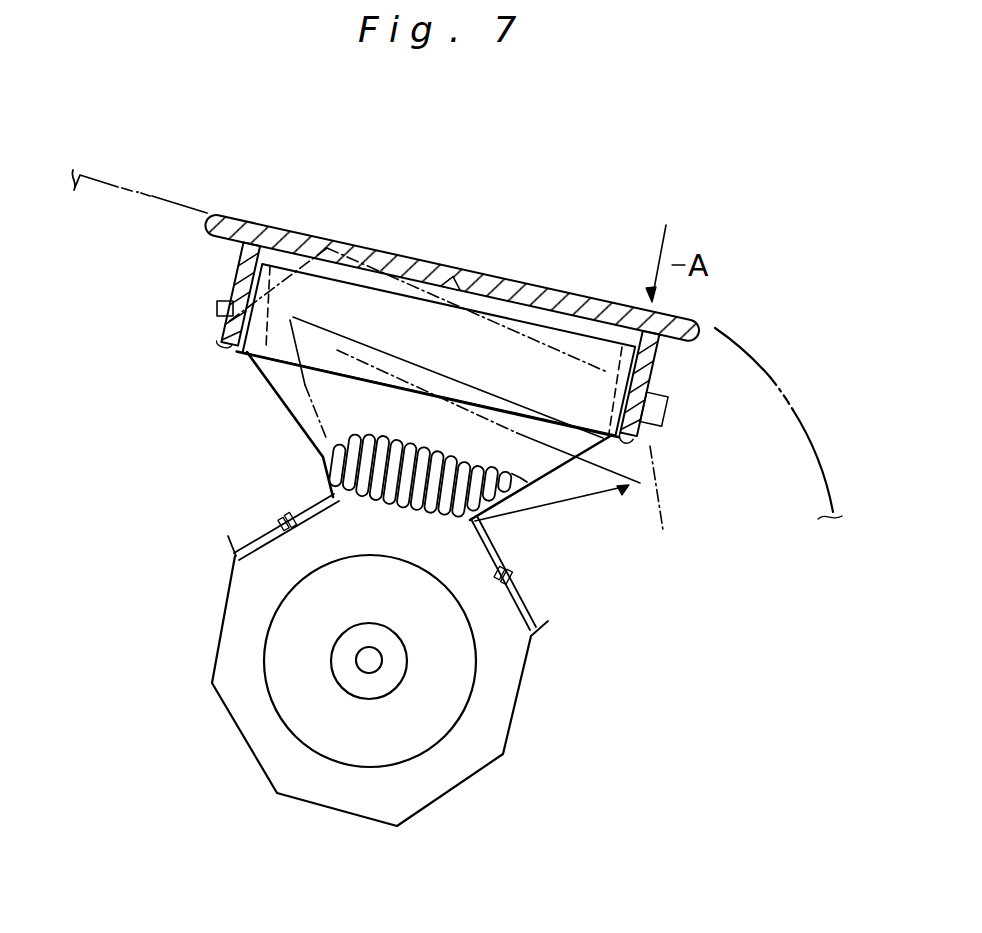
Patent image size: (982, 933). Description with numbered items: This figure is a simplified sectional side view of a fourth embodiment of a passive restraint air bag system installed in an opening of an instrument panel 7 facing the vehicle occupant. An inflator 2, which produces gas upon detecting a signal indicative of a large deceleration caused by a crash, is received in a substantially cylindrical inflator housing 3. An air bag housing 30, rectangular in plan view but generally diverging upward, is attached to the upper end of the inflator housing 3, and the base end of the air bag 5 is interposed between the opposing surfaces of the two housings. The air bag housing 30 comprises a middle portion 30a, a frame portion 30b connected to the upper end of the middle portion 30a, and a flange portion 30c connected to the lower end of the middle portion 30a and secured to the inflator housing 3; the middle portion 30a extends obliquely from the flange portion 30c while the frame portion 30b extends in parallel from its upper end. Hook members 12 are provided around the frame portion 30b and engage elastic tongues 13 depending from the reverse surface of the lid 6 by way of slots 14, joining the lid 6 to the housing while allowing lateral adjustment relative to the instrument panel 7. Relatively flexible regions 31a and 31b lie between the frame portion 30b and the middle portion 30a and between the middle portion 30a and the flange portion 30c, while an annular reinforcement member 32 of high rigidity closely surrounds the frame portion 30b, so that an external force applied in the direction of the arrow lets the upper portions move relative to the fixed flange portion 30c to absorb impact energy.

The inflator 2 is at (476, 671).
The inflator housing 3 is at (220, 639).
The air bag 5 is at (322, 479).
The lid 6 is at (476, 268).
The instrument panel 7 is at (190, 203).
The hook members 12 is at (217, 304).
The elastic tongues 13 is at (242, 259).
The slots 14 is at (240, 283).
The air bag housing 30 is at (86, 352).
The middle portion 30a is at (300, 388).
The frame portion 30b is at (286, 320).
The flange portion 30c is at (236, 550).
The flexible region 31a is at (610, 446).
The flexible region 31b is at (476, 522).
The annular reinforcement member 32 is at (641, 437).